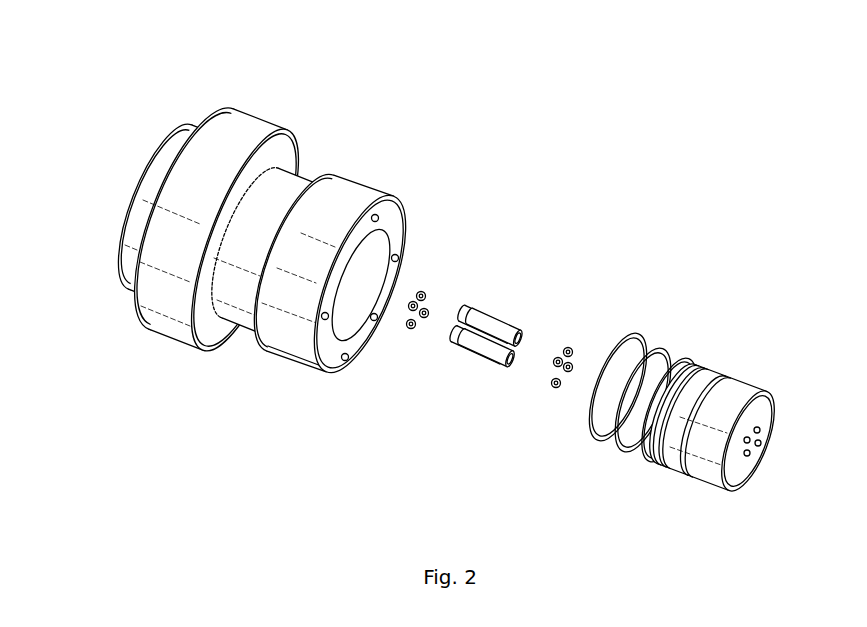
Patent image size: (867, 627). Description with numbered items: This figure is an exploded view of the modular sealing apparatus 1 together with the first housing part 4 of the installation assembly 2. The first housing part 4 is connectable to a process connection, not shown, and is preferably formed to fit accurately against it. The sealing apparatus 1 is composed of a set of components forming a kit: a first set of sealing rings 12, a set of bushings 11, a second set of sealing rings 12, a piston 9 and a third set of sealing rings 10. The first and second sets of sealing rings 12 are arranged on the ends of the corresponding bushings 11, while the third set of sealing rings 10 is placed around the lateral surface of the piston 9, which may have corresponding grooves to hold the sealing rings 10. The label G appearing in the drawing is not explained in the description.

The modular sealing apparatus 1 is at (98, 73).
The installation assembly 2 is at (441, 161).
The first housing part 4 is at (346, 191).
The piston 9 is at (727, 383).
The third set of sealing rings 10 is at (668, 347).
The set of bushings 11 is at (501, 313).
The first and second sets of sealing rings 12 is at (425, 290).
The gasket G is at (702, 474).